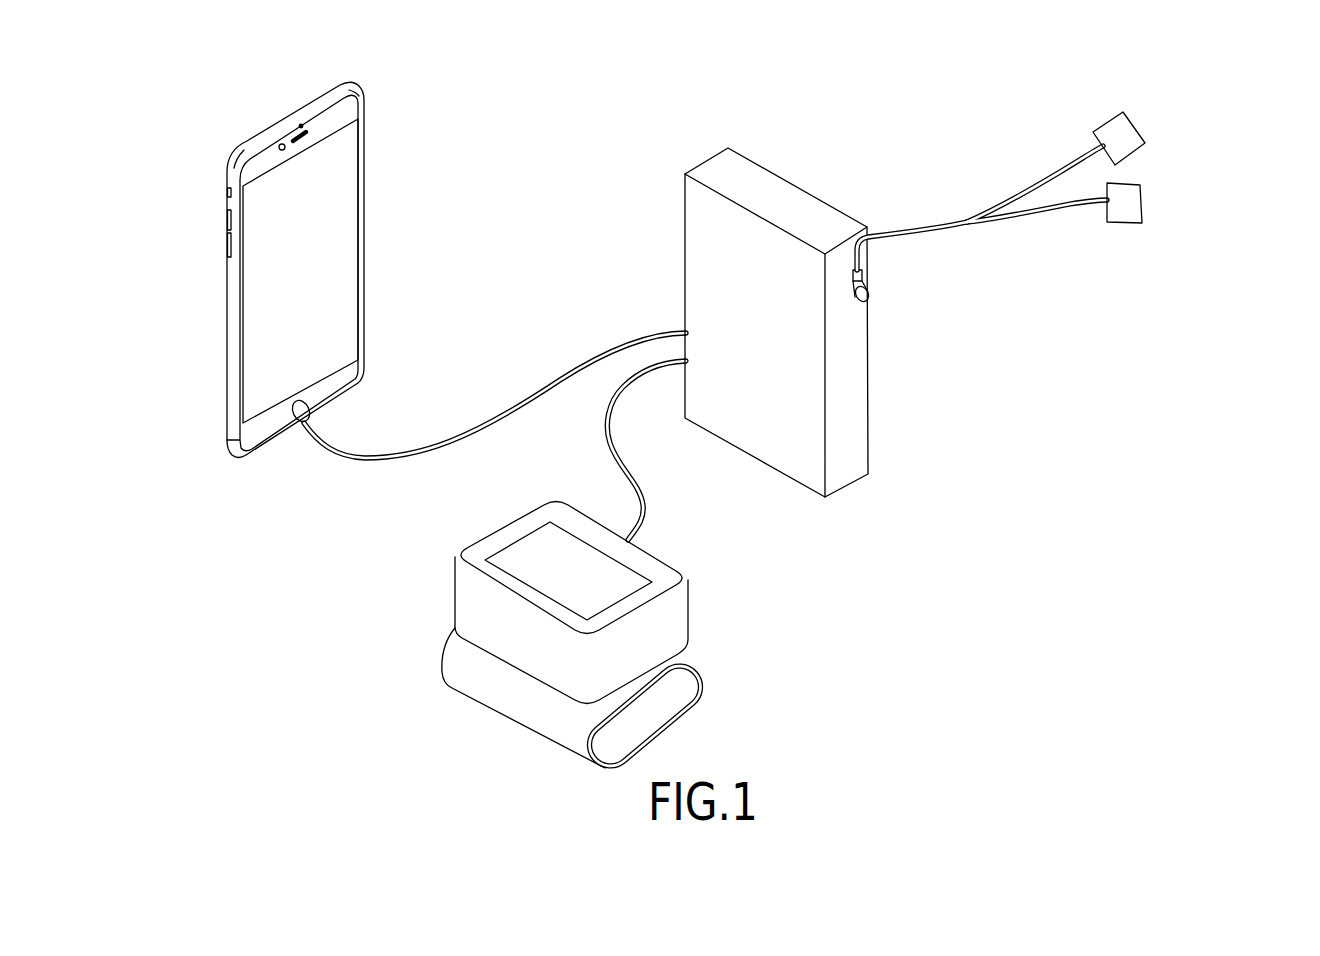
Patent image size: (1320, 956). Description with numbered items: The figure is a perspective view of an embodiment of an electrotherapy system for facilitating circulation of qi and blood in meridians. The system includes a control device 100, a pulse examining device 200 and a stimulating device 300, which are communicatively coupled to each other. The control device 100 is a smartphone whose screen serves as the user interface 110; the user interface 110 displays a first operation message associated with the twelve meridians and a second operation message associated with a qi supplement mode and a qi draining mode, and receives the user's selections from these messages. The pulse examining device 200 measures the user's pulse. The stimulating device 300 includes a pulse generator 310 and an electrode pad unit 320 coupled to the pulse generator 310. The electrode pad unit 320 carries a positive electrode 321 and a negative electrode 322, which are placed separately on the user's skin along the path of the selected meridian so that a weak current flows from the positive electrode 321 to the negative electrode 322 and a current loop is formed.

The control device 100 is at (210, 261).
The user interface 110 is at (254, 325).
The pulse examining device 200 is at (426, 590).
The stimulating device 300 is at (803, 184).
The pulse generator 310 is at (773, 453).
The electrode pad unit 320 is at (1232, 142).
The positive electrode 321 is at (1132, 140).
The negative electrode 322 is at (1130, 195).